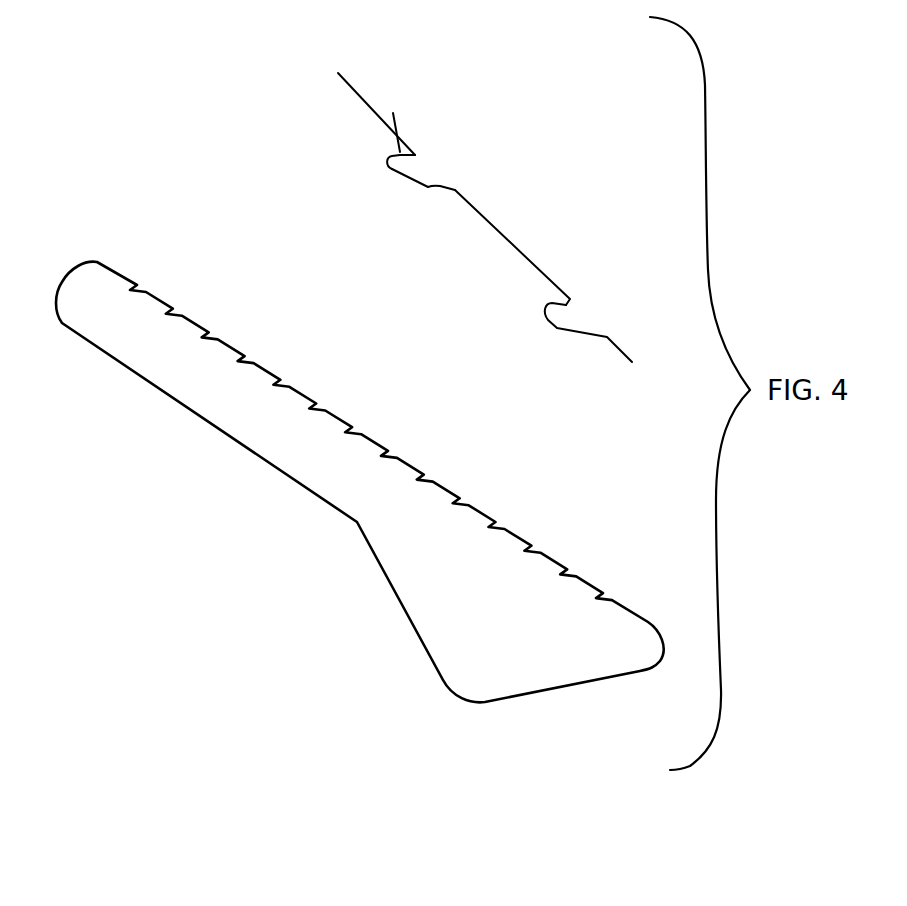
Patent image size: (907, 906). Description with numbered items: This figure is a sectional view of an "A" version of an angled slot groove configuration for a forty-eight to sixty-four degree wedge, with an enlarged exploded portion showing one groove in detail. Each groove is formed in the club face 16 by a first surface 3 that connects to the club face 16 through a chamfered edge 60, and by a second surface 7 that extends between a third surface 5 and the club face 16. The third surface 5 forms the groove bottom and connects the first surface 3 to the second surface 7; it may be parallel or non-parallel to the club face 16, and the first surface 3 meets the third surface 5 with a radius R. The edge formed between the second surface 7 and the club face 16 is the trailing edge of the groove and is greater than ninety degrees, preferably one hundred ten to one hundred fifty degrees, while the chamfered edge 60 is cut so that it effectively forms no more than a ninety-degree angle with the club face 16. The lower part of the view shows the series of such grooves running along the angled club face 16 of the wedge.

The first surface 3 is at (393, 113).
The chamfered edge 60 is at (416, 155).
The third surface 5 is at (388, 164).
The second surface 7 is at (430, 186).
The club face 16 is at (507, 243).
The radius R is at (553, 316).